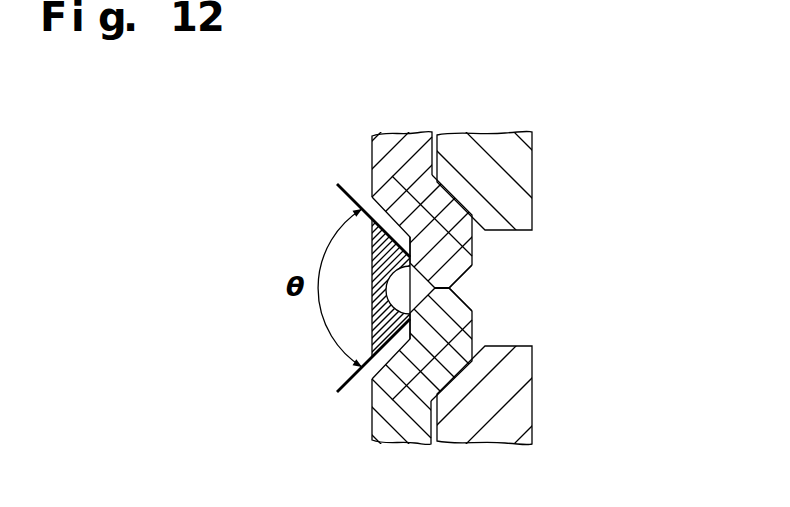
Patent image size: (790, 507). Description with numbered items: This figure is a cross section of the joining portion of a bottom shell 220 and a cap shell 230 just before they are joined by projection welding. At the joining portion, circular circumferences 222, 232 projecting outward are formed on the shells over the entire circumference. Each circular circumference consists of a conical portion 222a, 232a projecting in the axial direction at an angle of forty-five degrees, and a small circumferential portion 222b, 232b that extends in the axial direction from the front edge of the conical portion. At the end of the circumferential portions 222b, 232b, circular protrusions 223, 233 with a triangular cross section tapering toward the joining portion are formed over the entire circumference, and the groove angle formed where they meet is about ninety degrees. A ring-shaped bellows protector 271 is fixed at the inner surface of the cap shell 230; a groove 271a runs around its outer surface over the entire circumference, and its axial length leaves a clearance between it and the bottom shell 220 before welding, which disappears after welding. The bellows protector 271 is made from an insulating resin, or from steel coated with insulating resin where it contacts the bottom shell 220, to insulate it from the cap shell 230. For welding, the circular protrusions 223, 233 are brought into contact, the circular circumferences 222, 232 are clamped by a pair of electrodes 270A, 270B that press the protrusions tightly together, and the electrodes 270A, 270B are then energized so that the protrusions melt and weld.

The bottom shell 220 is at (372, 173).
The circular circumference 222 is at (651, 203).
The conical portion 222a is at (468, 211).
The circumferential portion 222b is at (472, 242).
The circular protrusion 223 is at (458, 280).
The cap shell 230 is at (372, 398).
The circular circumference 232 is at (651, 332).
The conical portion 232a is at (462, 372).
The circumferential portion 232b is at (472, 330).
The circular protrusion 233 is at (460, 298).
The electrode 270A is at (533, 172).
The electrode 270B is at (533, 410).
The bellows protector 271 is at (372, 253).
The groove 271a is at (388, 289).